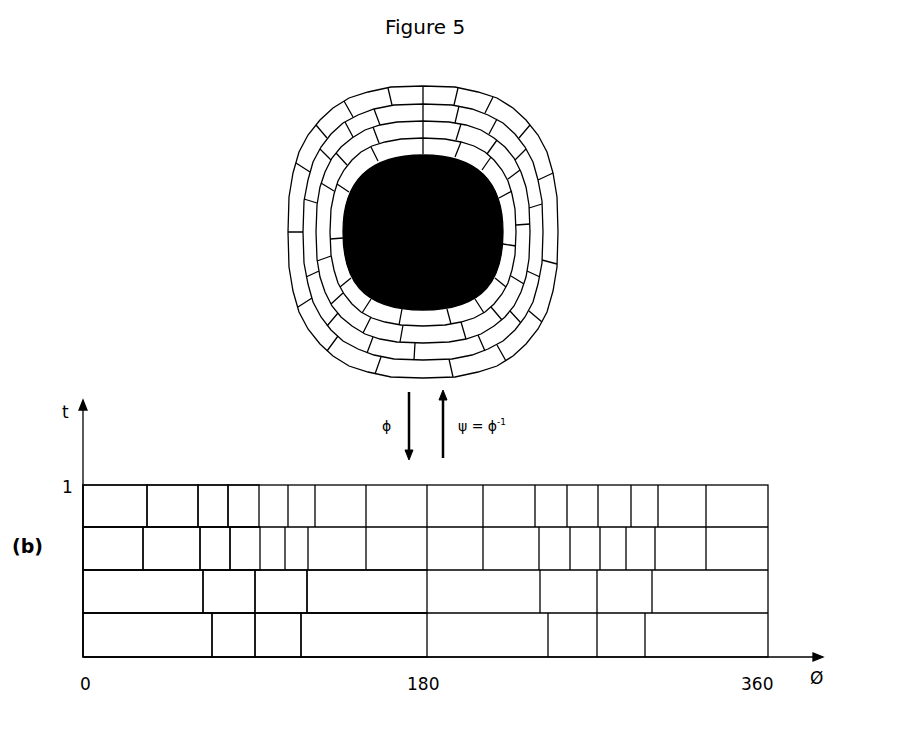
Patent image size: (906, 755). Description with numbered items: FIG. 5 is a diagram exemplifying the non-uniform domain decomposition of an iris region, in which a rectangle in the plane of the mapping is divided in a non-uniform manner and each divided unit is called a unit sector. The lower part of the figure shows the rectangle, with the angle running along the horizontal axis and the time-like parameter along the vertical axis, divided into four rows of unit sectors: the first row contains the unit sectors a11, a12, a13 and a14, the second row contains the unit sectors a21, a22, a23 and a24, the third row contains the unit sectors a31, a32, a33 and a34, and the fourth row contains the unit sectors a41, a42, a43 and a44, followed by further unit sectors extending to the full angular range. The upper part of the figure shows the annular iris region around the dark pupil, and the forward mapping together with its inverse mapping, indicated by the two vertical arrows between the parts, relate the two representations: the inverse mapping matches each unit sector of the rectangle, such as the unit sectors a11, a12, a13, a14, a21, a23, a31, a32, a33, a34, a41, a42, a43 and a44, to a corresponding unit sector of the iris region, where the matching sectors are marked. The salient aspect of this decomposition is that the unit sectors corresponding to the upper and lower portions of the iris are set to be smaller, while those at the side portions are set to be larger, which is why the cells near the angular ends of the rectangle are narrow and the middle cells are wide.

The unit sector a41 is at (556, 214).
The unit sector a42 is at (507, 112).
The unit sector a43 is at (333, 309).
The unit sector a44 is at (335, 308).
The unit sector a31 is at (552, 190).
The unit sector a32 is at (533, 142).
The unit sector a33 is at (334, 339).
The unit sector a34 is at (336, 338).
The unit sector a21 is at (553, 234).
The unit sector a22 is at (229, 591).
The unit sector a23 is at (350, 369).
The unit sector a24 is at (367, 591).
The unit sector a11 is at (556, 262).
The unit sector a12 is at (328, 399).
The unit sector a13 is at (386, 102).
The unit sector a14 is at (318, 168).